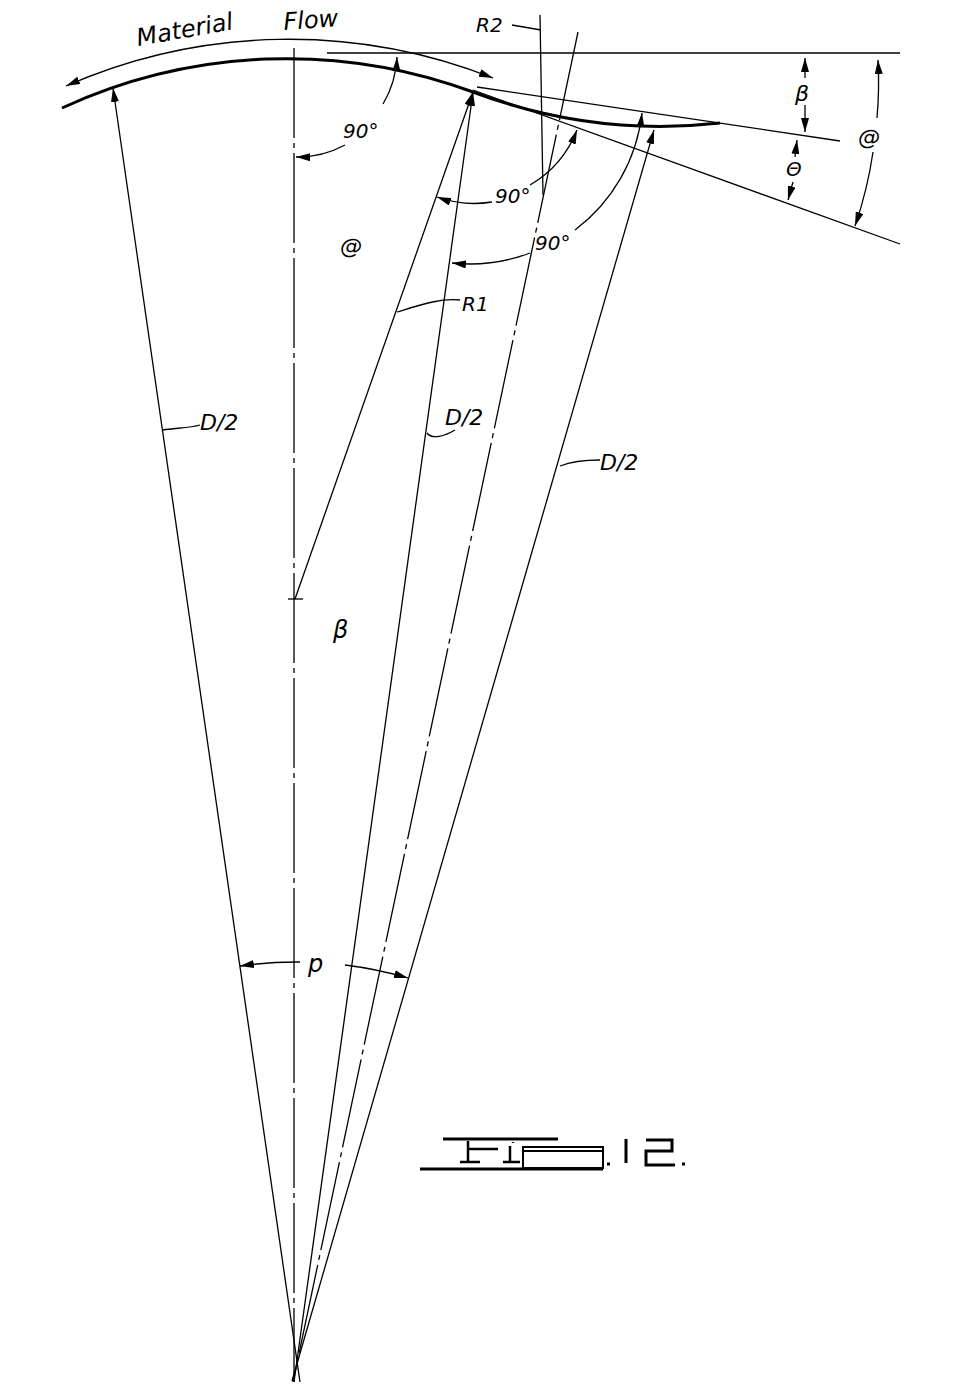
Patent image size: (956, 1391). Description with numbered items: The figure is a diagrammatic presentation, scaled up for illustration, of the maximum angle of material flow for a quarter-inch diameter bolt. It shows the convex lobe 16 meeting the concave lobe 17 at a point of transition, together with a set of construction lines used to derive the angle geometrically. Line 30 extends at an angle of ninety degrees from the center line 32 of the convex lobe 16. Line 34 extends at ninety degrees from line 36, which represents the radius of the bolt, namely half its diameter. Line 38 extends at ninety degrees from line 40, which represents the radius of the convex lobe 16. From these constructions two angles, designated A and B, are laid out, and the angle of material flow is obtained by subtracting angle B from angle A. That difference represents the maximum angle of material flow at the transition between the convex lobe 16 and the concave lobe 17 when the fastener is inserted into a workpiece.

The convex lobe 16 is at (187, 58).
The concave lobe 17 is at (602, 113).
The line 30 is at (714, 55).
The center line 32 is at (294, 370).
The line 34 is at (763, 133).
The line 36 is at (407, 573).
The line 38 is at (801, 208).
The line 40 is at (342, 465).